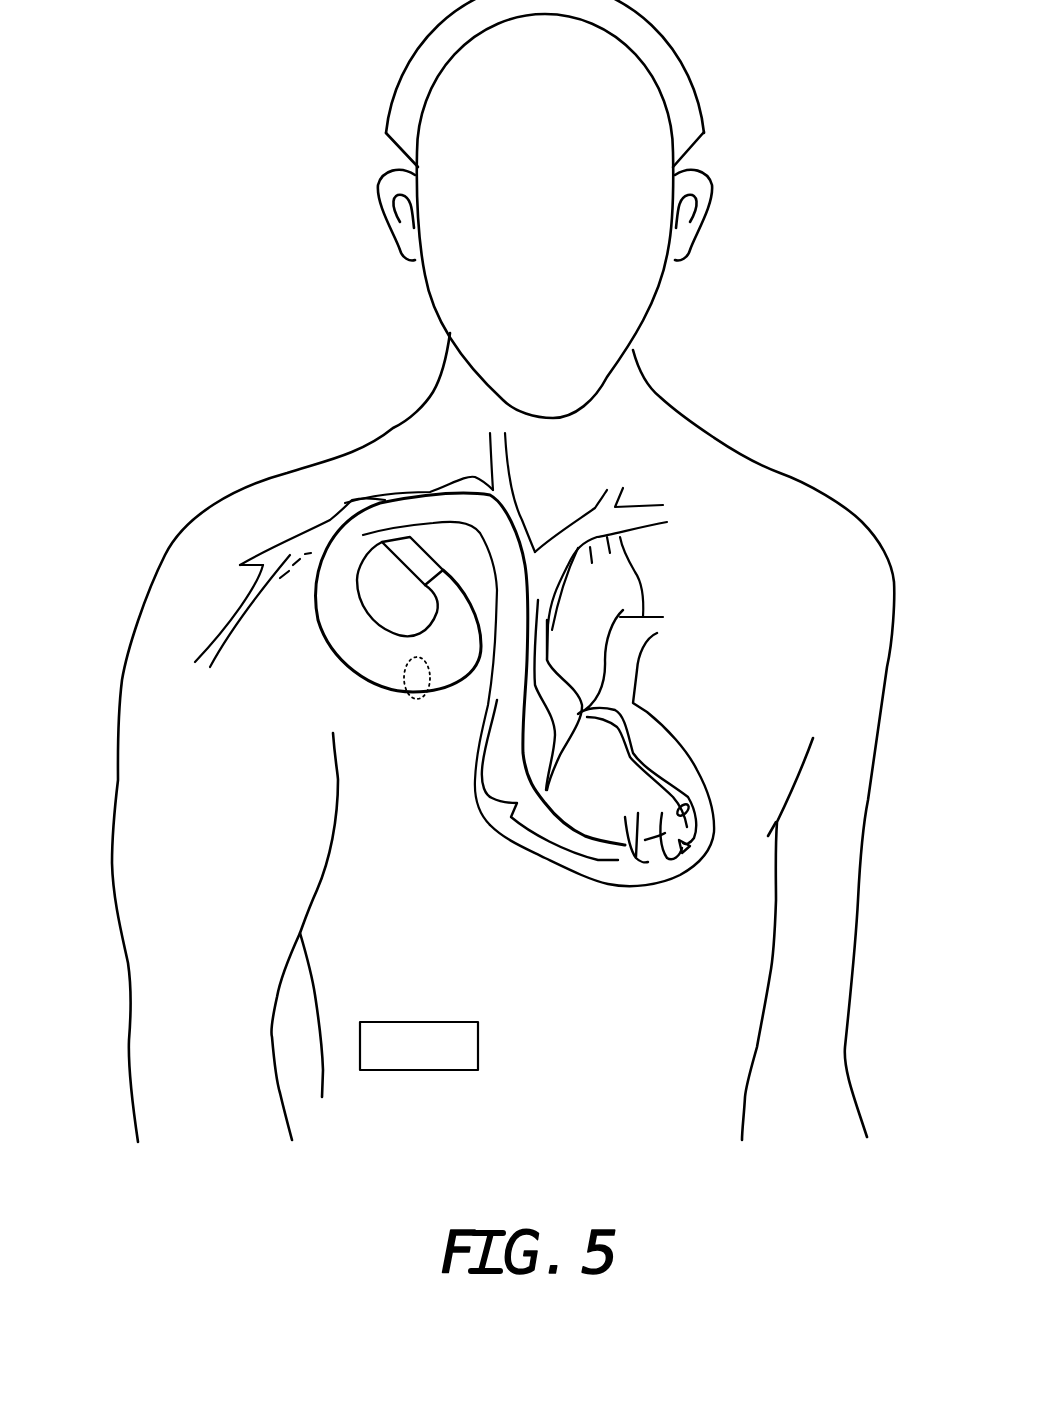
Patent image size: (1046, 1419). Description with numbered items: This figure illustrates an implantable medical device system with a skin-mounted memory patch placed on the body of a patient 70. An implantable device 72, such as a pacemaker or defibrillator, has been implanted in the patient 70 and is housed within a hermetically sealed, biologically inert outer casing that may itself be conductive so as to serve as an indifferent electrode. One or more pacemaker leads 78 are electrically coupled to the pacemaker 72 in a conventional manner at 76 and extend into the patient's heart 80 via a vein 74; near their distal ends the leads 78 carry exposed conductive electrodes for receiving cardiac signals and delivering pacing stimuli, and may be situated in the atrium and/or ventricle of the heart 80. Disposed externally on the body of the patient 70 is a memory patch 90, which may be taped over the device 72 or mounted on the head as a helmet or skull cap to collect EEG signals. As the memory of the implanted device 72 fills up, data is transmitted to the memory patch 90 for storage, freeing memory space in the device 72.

The patient 70 is at (780, 473).
The implantable device 72 is at (373, 624).
The vein 74 is at (300, 532).
The lead coupling location 76 is at (404, 543).
The pacemaker leads 78 is at (424, 700).
The heart 80 is at (622, 887).
The memory patch 90 is at (693, 95).